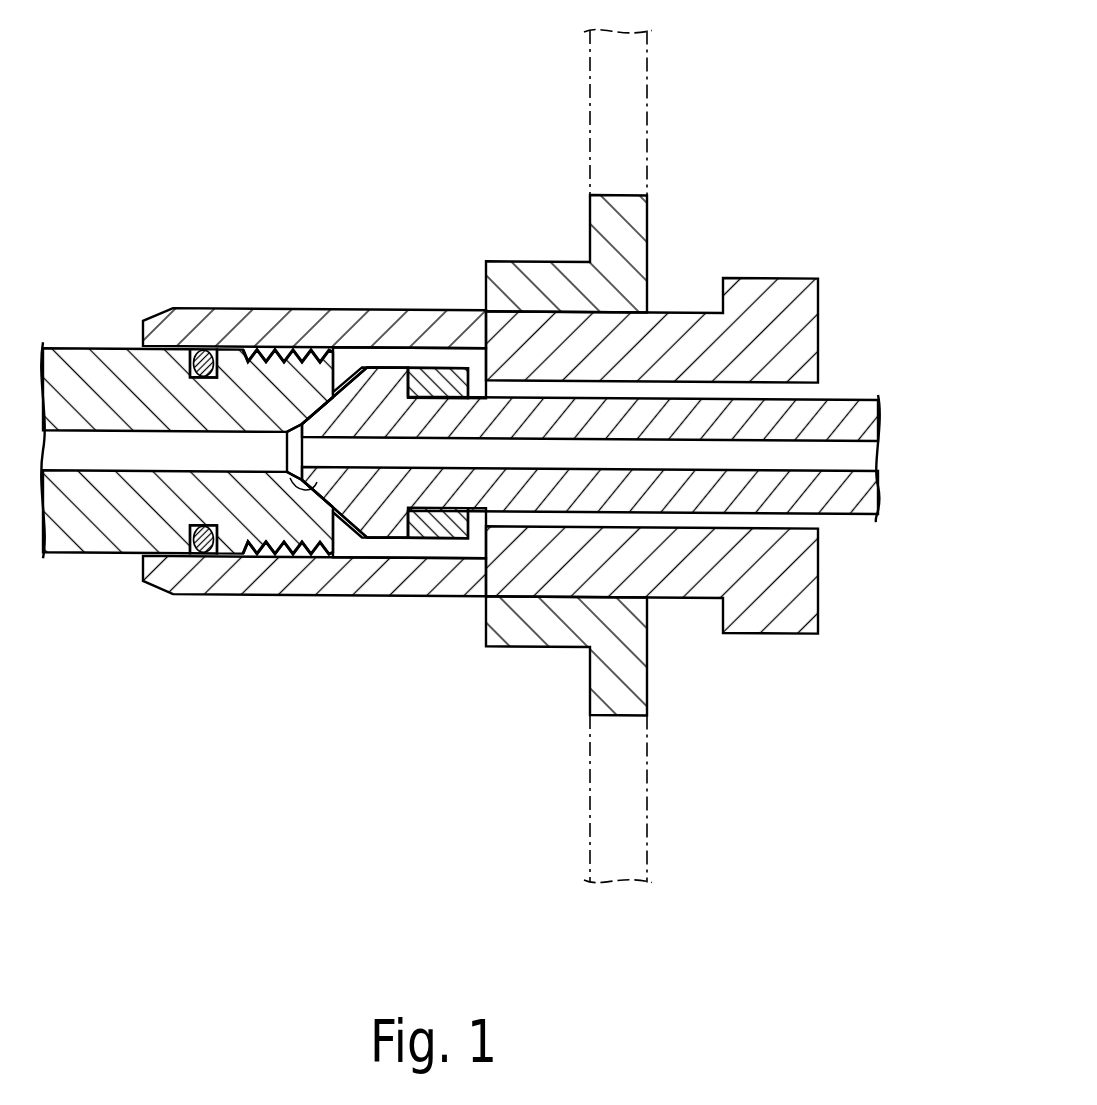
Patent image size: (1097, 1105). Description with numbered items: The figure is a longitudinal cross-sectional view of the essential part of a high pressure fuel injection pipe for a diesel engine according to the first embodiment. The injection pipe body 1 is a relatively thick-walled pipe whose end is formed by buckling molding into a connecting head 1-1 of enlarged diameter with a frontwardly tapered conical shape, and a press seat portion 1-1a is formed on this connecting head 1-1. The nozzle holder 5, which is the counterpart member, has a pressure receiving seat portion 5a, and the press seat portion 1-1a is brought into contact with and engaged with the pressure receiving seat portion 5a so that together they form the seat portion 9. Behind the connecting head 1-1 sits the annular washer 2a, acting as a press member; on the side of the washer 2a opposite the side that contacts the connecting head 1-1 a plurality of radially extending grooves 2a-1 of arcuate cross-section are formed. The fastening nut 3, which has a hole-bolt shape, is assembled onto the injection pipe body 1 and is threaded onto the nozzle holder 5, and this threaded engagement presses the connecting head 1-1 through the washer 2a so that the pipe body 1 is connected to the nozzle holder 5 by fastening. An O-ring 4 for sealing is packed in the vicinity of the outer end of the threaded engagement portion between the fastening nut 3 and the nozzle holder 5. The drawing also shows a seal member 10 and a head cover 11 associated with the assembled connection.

The injection pipe body 1 is at (850, 413).
The connecting head 1-1 is at (390, 387).
The press seat portion 1-1a is at (347, 520).
The annular washer 2a is at (435, 540).
The grooves 2a-1 is at (479, 362).
The fastening nut 3 is at (345, 309).
The O-ring 4 is at (202, 347).
The nozzle holder 5 is at (78, 372).
The pressure receiving seat portion 5a is at (298, 496).
The seat portion 9 is at (320, 373).
The seal member 10 is at (648, 212).
The head cover 11 is at (625, 72).